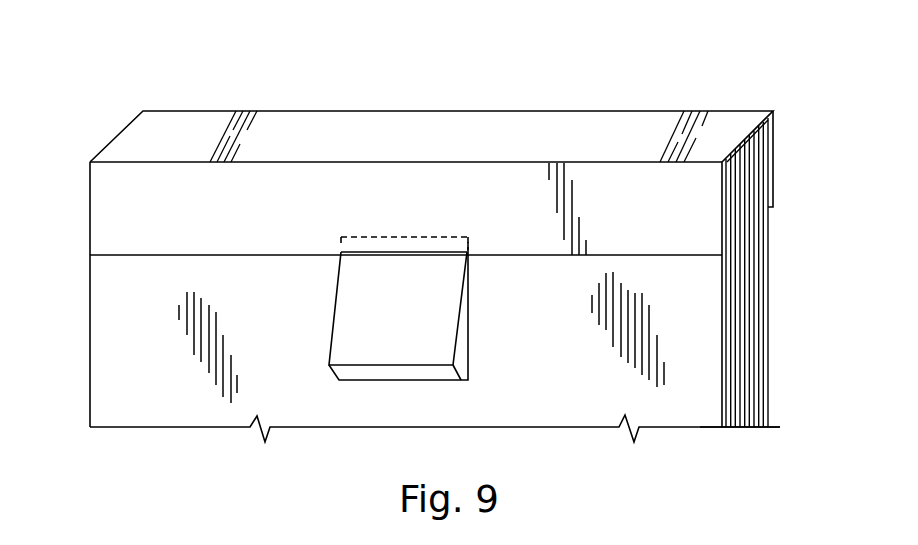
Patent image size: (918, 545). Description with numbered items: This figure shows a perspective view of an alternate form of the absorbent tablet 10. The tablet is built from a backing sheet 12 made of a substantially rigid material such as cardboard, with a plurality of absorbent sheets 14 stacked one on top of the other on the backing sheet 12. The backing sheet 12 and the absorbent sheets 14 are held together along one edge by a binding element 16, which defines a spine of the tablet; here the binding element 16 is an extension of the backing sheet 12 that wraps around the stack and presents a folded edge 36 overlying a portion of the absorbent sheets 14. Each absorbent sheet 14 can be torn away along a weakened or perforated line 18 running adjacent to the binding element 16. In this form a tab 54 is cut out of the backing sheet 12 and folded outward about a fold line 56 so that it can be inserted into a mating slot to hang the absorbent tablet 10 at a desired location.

The absorbent tablet 10 is at (267, 94).
The backing sheet 12 is at (549, 398).
The absorbent sheets 14 is at (750, 427).
The binding element 16 is at (108, 138).
The perforated line 18 is at (767, 226).
The folded edge 36 is at (774, 169).
The tab 54 is at (416, 316).
The fold line 56 is at (389, 236).